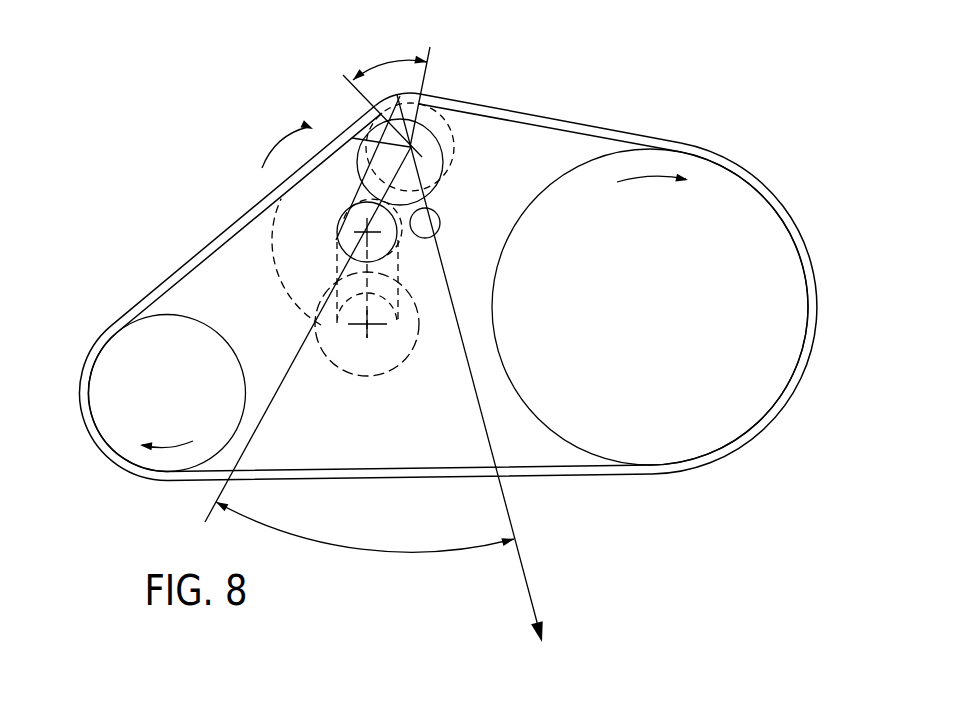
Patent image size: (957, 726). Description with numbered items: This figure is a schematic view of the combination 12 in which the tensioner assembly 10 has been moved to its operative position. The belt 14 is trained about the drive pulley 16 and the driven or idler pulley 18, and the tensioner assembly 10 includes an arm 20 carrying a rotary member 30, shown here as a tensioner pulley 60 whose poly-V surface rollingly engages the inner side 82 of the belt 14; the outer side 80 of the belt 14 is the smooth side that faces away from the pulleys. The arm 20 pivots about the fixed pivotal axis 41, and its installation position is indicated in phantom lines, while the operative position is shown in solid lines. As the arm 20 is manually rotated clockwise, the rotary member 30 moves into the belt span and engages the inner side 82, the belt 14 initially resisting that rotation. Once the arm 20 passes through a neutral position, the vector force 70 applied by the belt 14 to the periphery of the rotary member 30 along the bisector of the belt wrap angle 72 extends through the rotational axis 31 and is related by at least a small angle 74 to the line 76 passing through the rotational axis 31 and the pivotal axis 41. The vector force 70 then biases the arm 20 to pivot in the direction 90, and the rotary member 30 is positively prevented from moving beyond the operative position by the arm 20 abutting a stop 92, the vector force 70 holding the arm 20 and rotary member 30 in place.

The tensioner assembly 10 is at (474, 175).
The combination 12 is at (469, 92).
The belt 14 is at (524, 113).
The drive pulley 16 is at (744, 416).
The driven or idler pulley 18 is at (112, 429).
The arm 20 is at (335, 217).
The rotary member 30 is at (351, 161).
The rotational axis 31 is at (410, 147).
The fixed pivotal axis 41 is at (372, 238).
The tensioner pulley 60 is at (436, 92).
The vector force 70 is at (546, 628).
The belt wrap angle 72 is at (383, 62).
The small angle 74 is at (357, 549).
The line 76 is at (288, 374).
The belt outer surface 80 is at (208, 245).
The inner side 82 is at (212, 258).
The direction 90 is at (310, 127).
The stop 92 is at (441, 219).